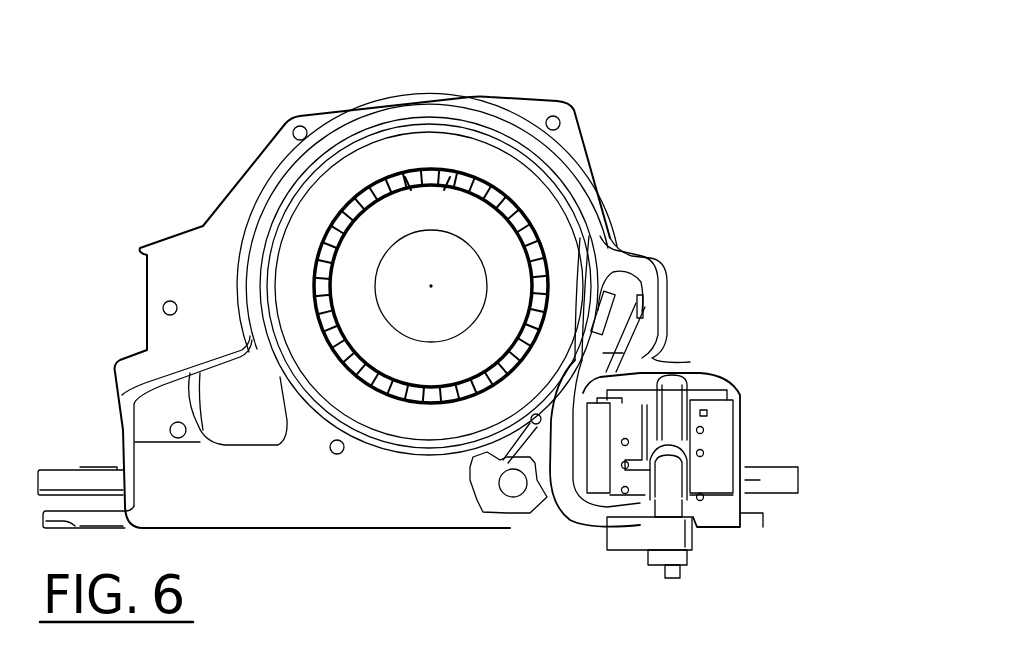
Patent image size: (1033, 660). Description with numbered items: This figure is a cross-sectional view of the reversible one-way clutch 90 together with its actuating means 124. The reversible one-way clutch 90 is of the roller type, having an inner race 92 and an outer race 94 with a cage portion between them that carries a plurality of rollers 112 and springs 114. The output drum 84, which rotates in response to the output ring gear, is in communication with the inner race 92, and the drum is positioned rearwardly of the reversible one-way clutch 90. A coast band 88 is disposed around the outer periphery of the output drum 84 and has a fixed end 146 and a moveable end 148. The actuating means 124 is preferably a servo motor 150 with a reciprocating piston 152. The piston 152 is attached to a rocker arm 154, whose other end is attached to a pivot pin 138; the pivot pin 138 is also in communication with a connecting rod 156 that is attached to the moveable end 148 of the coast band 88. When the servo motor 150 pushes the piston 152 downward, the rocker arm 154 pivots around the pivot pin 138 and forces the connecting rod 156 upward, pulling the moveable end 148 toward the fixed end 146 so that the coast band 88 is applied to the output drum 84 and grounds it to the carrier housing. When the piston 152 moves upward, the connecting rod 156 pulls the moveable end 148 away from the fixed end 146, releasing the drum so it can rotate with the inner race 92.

The output drum 84 is at (529, 223).
The coast band 88 is at (417, 452).
The reversible one-way clutch 90 is at (601, 173).
The inner race 92 is at (505, 232).
The outer race 94 is at (495, 162).
The rollers 112 is at (550, 266).
The springs 114 is at (450, 172).
The actuating means 124 is at (721, 368).
The pivot pin 138 is at (513, 490).
The fixed end 146 is at (600, 265).
The moveable end 148 is at (537, 425).
The servo motor 150 is at (722, 449).
The reciprocating piston 152 is at (680, 573).
The rocker arm 154 is at (600, 542).
The connecting rod 156 is at (608, 311).